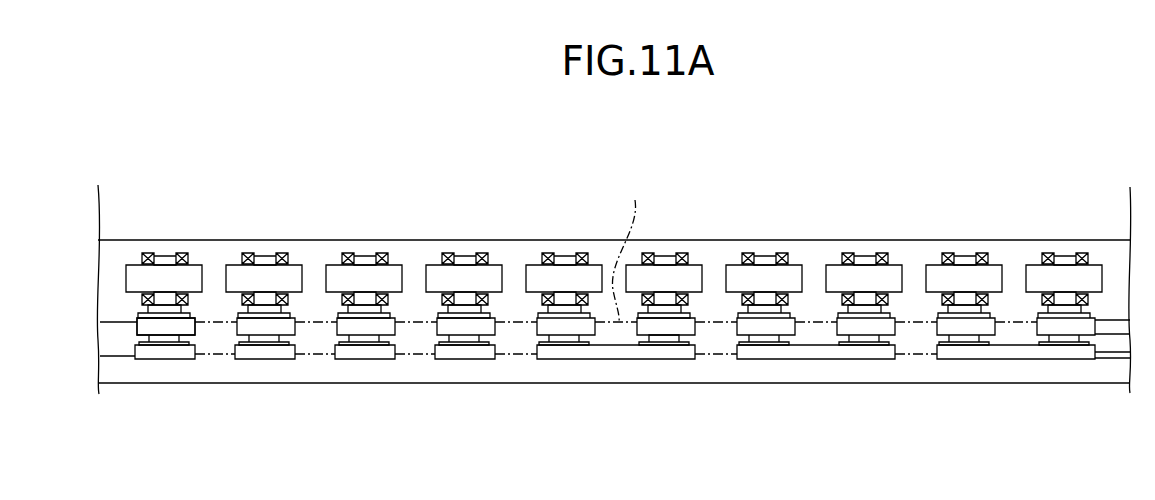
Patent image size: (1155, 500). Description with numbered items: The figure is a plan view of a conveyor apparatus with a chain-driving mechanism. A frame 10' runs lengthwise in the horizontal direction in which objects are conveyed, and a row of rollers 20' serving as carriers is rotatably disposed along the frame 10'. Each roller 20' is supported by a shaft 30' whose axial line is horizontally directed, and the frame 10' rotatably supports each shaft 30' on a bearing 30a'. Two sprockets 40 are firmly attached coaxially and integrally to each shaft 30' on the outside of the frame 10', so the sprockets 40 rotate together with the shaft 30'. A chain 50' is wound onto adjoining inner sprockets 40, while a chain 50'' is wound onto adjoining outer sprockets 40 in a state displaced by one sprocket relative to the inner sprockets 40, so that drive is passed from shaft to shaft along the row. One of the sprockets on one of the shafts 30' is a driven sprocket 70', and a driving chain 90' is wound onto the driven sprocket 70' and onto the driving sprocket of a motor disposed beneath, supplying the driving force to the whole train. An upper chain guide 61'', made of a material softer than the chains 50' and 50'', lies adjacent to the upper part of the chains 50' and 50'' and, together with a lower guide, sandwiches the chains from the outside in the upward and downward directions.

The frame 10' is at (613, 330).
The roller 20' is at (619, 241).
The shaft 30' is at (615, 233).
The bearing 30a' is at (194, 247).
The sprocket 40 is at (134, 345).
The chain 50' is at (612, 396).
The chain 50'' is at (665, 398).
The upper chain guide 61'' is at (657, 225).
The driven sprocket 70' is at (109, 314).
The driving chain 90' is at (112, 337).